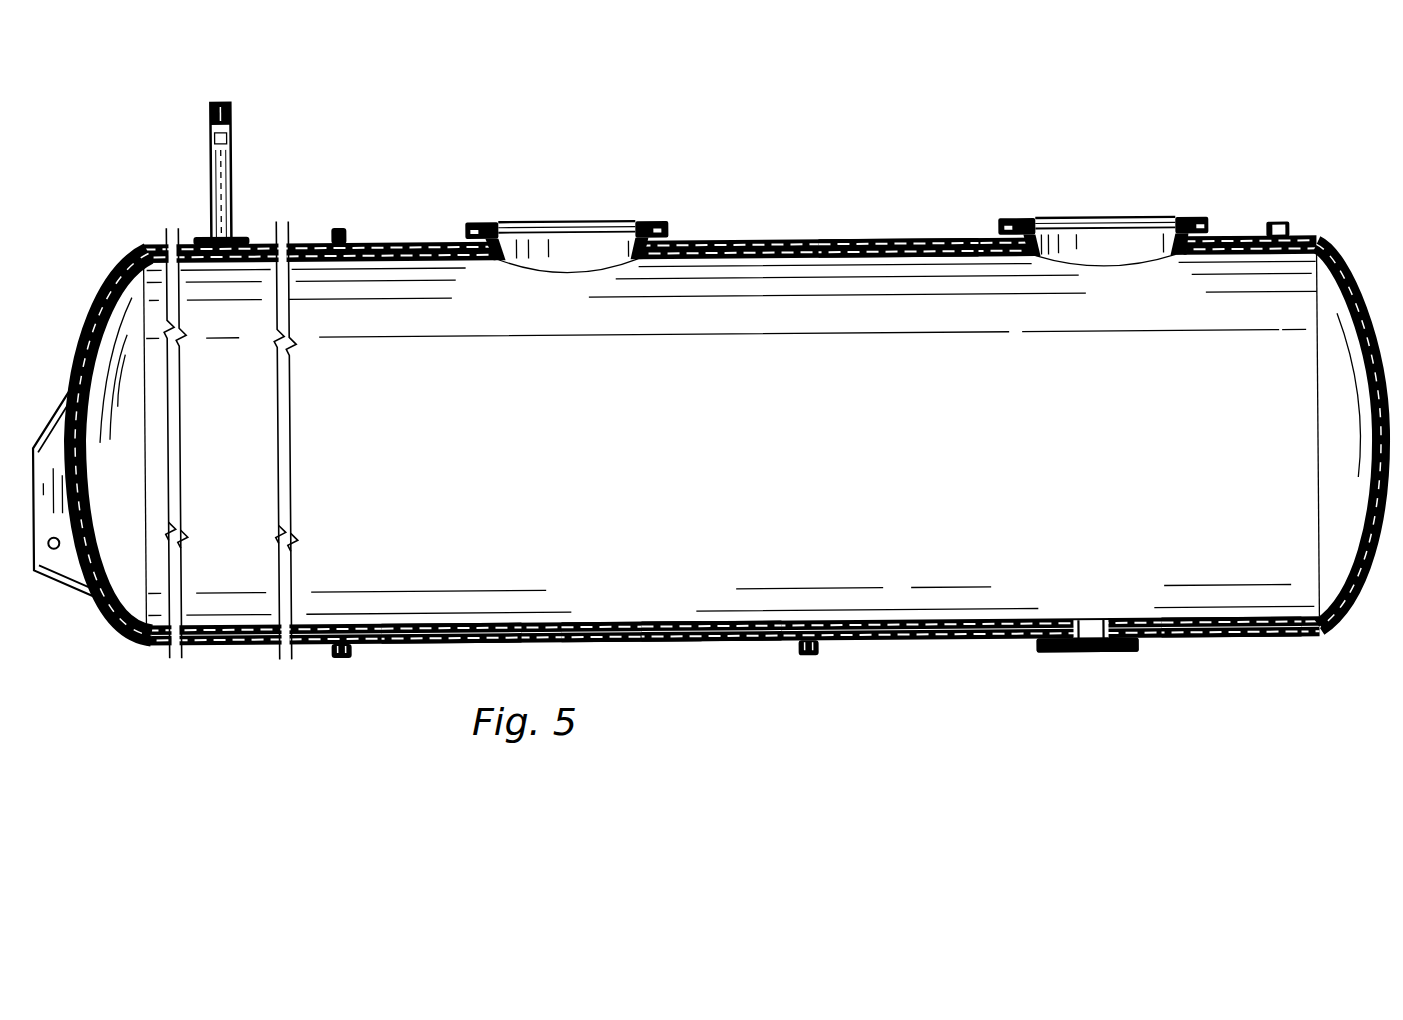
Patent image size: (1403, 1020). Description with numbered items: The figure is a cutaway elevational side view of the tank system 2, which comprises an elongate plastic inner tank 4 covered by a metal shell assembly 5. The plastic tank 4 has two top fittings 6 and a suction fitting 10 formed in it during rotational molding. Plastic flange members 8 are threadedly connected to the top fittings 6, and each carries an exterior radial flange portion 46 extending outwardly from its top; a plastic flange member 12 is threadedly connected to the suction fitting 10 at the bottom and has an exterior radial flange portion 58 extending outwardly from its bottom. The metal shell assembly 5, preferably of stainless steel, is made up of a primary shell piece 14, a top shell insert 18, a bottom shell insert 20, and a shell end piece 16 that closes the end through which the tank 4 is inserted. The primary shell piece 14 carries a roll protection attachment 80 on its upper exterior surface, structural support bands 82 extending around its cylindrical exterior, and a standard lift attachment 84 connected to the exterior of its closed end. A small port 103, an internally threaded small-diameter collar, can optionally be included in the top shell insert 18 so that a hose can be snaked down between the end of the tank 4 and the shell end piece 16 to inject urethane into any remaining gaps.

The tank system 2 is at (696, 437).
The plastic inner tank 4 is at (627, 622).
The metal shell assembly 5 is at (700, 643).
The top fittings 6 is at (507, 262).
The plastic flange members 8 is at (490, 222).
The suction fitting 10 is at (1074, 630).
The plastic flange member 12 is at (1048, 654).
The primary shell piece 14 is at (450, 648).
The shell end piece 16 is at (1350, 275).
The top shell insert 18 is at (898, 240).
The bottom shell insert 20 is at (1230, 638).
The exterior radial flange portion 46 is at (653, 222).
The exterior radial flange portion 58 is at (1088, 645).
The roll protection attachment 80 is at (213, 188).
The structural support bands 82 is at (337, 660).
The standard lift attachment 84 is at (77, 593).
The small port 103 is at (1294, 233).